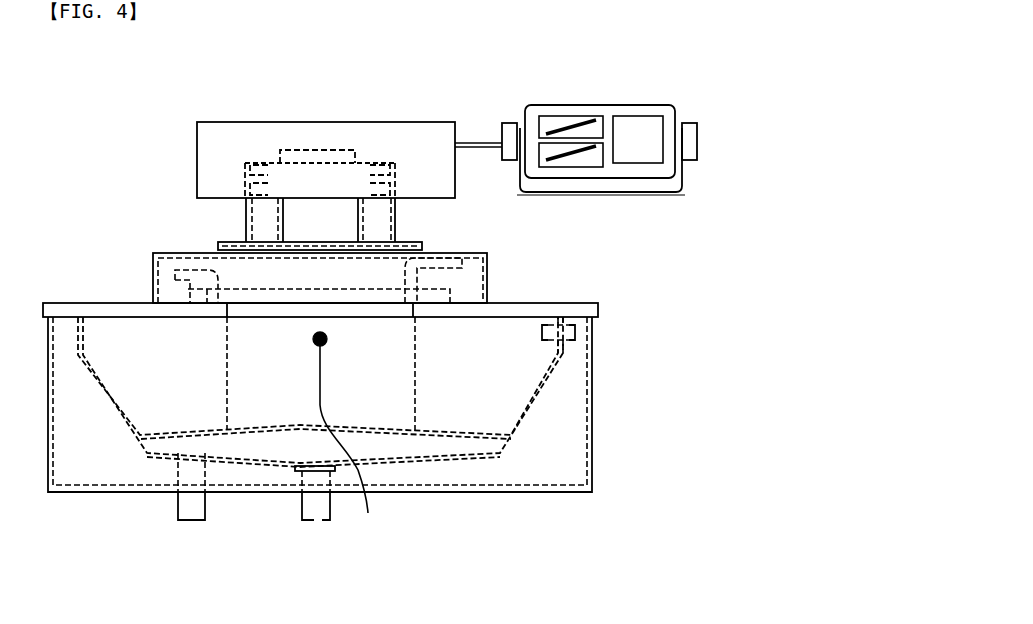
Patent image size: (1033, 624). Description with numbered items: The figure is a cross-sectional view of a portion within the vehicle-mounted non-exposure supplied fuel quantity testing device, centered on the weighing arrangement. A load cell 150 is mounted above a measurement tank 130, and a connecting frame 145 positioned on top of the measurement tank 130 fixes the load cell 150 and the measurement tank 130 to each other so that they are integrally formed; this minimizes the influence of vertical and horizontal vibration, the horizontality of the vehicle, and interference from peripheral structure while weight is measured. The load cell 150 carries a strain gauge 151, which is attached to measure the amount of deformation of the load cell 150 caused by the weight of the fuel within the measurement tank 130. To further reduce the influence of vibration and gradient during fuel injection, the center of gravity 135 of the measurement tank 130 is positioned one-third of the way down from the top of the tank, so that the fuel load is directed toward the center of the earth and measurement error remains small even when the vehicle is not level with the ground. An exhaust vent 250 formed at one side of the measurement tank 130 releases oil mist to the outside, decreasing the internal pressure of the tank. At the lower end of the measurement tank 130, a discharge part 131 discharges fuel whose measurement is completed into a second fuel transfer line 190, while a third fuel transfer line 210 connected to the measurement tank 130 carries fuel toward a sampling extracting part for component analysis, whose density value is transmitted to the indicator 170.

The measurement tank 130 is at (510, 402).
The discharge part 131 is at (297, 470).
The center of gravity 135 is at (351, 438).
The connecting frame 145 is at (395, 230).
The load cell 150 is at (383, 163).
The strain gauge 151 is at (255, 162).
The indicator 170 is at (588, 108).
The second fuel transfer line 190 is at (317, 518).
The third fuel transfer line 210 is at (190, 513).
The exhaust vent 250 is at (575, 331).